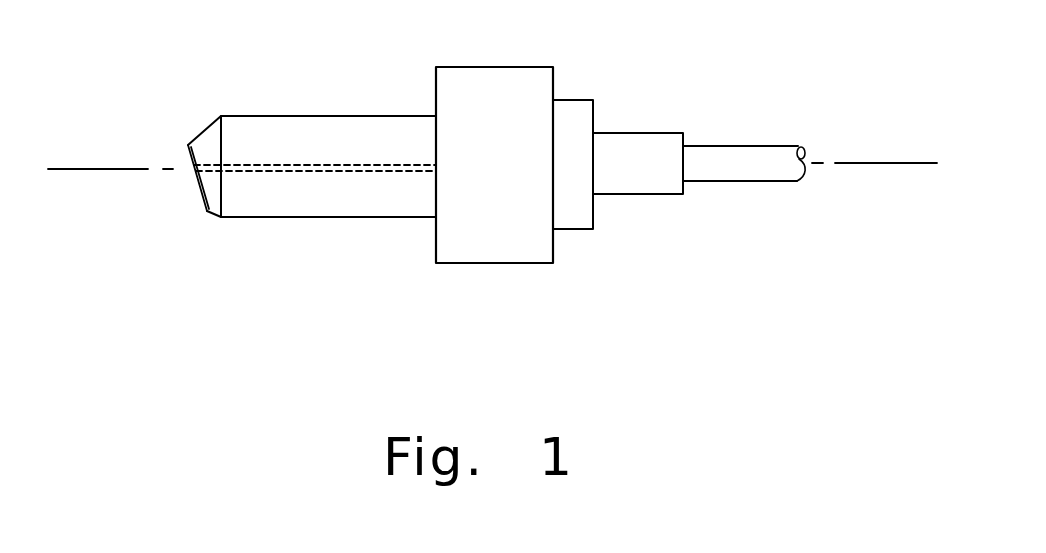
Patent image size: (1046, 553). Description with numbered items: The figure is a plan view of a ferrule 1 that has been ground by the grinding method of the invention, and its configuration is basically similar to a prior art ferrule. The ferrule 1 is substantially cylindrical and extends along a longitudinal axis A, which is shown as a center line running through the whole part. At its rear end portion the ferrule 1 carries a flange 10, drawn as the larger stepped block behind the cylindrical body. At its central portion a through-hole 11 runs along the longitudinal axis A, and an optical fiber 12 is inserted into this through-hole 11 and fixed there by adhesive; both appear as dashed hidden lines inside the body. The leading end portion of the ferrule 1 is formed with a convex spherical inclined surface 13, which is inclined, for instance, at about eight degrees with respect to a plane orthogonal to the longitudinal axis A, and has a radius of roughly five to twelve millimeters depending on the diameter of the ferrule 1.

The ferrule 1 is at (265, 116).
The flange 10 is at (508, 83).
The through-hole 11 is at (292, 170).
The optical fiber 12 is at (343, 172).
The convex spherical inclined surface 13 is at (198, 193).
The longitudinal axis A is at (83, 169).